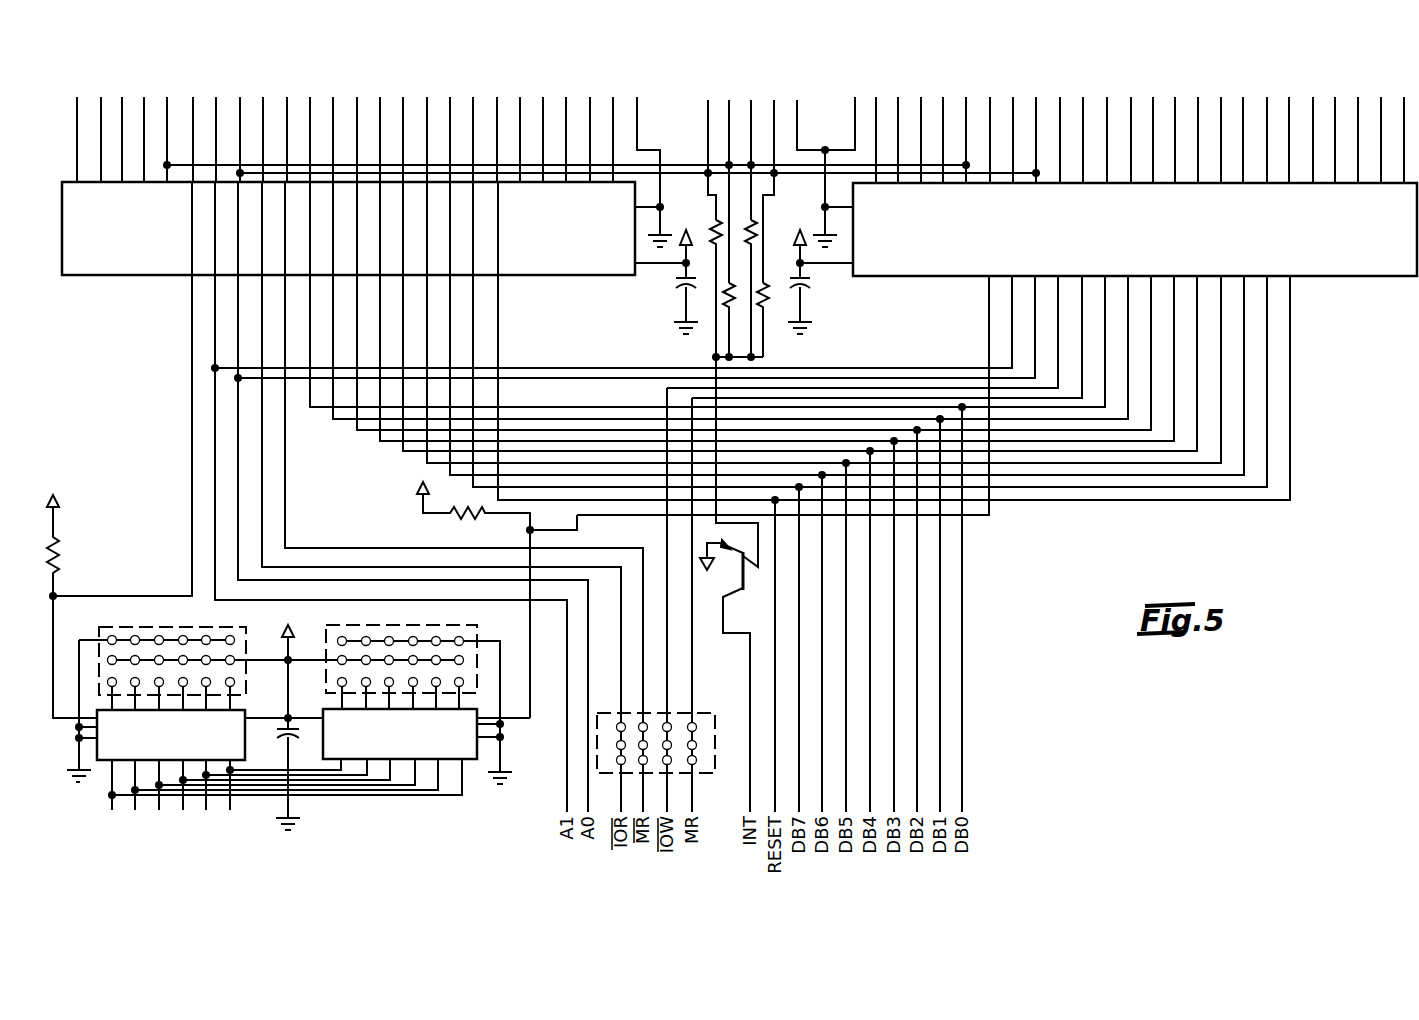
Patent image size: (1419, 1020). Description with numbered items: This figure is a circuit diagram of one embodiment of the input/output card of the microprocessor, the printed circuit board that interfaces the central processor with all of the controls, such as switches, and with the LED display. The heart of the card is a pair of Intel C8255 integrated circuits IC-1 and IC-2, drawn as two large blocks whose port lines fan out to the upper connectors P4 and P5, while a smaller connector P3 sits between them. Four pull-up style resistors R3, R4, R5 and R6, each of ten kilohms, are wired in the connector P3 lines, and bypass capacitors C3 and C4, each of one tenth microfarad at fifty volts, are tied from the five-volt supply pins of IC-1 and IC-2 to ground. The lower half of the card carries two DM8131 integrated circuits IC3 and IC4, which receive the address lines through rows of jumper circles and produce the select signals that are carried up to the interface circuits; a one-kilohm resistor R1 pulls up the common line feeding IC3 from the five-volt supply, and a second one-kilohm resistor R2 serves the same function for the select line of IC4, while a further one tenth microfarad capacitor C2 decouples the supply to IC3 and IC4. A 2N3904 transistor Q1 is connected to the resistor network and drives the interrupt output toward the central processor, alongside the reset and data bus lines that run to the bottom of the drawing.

The integrated circuit IC-1 is at (348, 228).
The integrated circuit IC-2 is at (1135, 229).
The integrated circuit IC3 is at (204, 738).
The integrated circuit IC4 is at (319, 712).
The resistor R1 is at (69, 593).
The resistor R2 is at (473, 600).
The resistor R3 is at (714, 243).
The resistor R4 is at (727, 305).
The resistor R5 is at (755, 236).
The resistor R6 is at (765, 306).
The capacitor C2 is at (284, 727).
The capacitor C3 is at (672, 270).
The capacitor C4 is at (817, 270).
The transistor Q1 is at (736, 676).
The connector P3 is at (795, 45).
The connector P4 is at (640, 45).
The connector P5 is at (1410, 45).